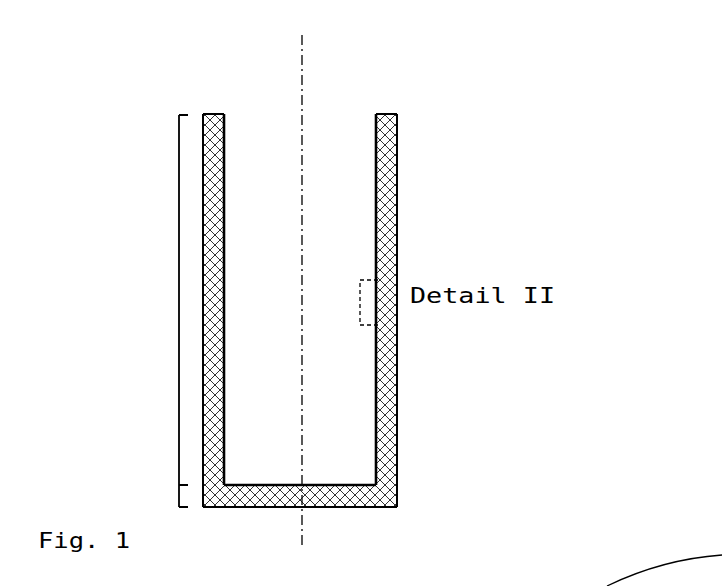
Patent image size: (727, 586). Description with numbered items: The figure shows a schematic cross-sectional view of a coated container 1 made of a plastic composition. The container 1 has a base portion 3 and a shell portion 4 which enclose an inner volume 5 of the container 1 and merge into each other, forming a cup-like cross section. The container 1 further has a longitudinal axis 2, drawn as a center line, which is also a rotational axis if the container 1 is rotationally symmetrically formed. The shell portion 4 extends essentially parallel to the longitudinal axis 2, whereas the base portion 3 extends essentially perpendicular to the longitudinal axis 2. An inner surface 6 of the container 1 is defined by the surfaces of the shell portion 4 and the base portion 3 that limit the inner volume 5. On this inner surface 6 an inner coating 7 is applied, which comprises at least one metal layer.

The container 1 is at (158, 50).
The longitudinal axis 2 is at (302, 530).
The base portion 3 is at (179, 495).
The shell portion 4 is at (179, 300).
The inner volume 5 is at (286, 271).
The inner surface 6 is at (377, 155).
The inner coating 7 is at (225, 123).